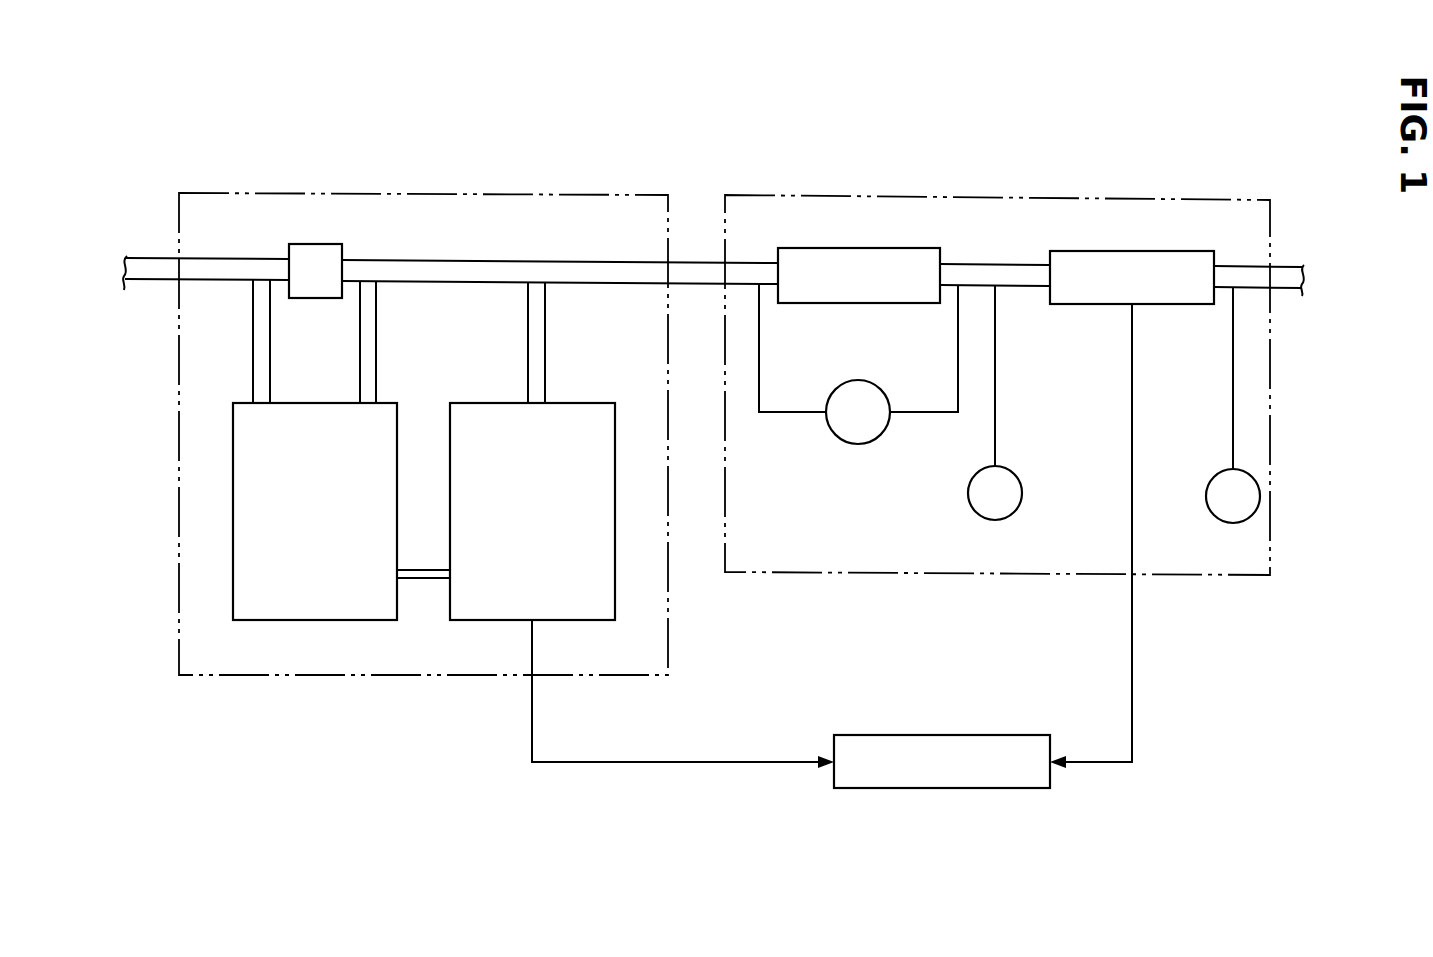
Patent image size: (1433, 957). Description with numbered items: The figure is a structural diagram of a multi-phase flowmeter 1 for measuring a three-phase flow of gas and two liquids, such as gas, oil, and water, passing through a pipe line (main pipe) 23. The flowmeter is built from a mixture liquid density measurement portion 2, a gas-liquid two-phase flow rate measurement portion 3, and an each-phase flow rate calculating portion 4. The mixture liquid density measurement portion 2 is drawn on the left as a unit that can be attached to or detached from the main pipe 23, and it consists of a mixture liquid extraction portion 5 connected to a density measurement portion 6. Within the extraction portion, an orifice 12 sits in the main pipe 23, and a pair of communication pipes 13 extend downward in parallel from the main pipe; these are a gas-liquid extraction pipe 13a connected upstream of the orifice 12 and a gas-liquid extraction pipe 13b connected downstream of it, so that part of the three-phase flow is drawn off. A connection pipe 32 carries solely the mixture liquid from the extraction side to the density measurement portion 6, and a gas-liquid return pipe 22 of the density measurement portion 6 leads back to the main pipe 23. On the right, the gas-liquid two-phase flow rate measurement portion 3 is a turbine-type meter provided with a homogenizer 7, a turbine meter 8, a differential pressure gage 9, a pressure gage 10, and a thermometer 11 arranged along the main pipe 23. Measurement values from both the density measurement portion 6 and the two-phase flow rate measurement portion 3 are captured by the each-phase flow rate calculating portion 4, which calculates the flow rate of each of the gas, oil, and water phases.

The multi-phase flowmeter 1 is at (725, 138).
The mixture liquid density measurement portion 2 is at (440, 193).
The gas-liquid two-phase flow rate measurement portion 3 is at (1013, 196).
The each-phase flow rate calculating portion 4 is at (997, 735).
The mixture liquid extraction portion 5 is at (226, 363).
The density measurement portion 6 is at (582, 345).
The homogenizer 7 is at (902, 248).
The turbine meter 8 is at (1166, 251).
The differential pressure gage 9 is at (858, 445).
The pressure gage 10 is at (995, 520).
The thermometer 11 is at (1233, 523).
The orifice 12 is at (321, 244).
The communication pipes 13 is at (379, 341).
The gas-liquid extraction pipe 13a is at (264, 340).
The gas-liquid extraction pipe 13b is at (372, 340).
The gas-liquid return pipe 22 is at (546, 367).
The pipe line (main pipe) 23 is at (156, 258).
The connection pipe 32 is at (423, 580).